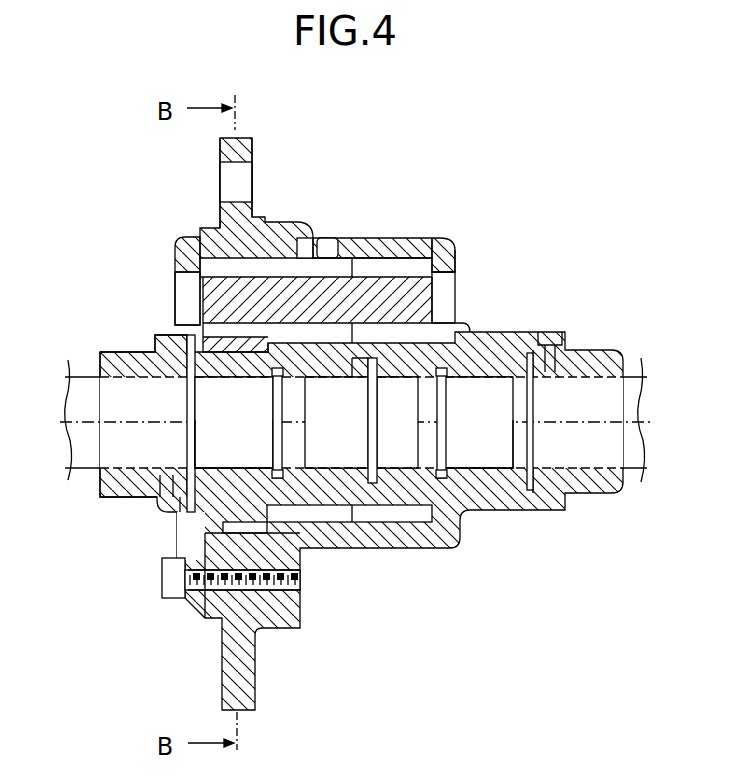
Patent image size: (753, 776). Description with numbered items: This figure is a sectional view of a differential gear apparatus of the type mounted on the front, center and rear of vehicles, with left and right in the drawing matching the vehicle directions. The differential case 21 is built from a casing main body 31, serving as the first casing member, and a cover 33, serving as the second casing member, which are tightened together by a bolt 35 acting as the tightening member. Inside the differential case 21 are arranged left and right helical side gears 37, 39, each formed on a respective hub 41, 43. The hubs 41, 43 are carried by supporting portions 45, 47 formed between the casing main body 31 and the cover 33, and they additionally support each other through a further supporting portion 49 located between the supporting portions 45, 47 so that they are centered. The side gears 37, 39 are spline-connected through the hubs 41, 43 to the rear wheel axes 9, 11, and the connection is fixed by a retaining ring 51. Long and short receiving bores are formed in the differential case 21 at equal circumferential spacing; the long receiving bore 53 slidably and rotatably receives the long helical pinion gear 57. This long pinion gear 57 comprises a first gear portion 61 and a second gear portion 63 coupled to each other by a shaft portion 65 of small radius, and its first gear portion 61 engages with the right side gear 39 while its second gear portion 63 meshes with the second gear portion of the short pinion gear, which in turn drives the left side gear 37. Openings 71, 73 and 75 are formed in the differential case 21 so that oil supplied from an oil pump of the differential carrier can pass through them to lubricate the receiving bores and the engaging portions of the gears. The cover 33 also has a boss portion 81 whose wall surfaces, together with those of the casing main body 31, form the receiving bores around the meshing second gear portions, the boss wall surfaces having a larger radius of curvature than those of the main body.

The rear wheel axis 9 is at (73, 345).
The rear wheel axis 11 is at (633, 345).
The differential case 21 is at (199, 226).
The casing main body 31 is at (262, 212).
The cover 33 is at (176, 238).
The bolt 35 is at (168, 598).
The helical side gear 37 is at (335, 520).
The helical side gear 39 is at (406, 520).
The hub 41 is at (248, 411).
The hub 43 is at (494, 411).
The supporting portion 45 is at (224, 498).
The supporting portion 47 is at (483, 475).
The supporting portion 49 is at (353, 362).
The retaining ring 51 is at (283, 390).
The receiving bore 53 is at (300, 262).
The long helical pinion gear 57 is at (445, 250).
The first gear portion 61 is at (384, 336).
The second gear portion 63 is at (242, 338).
The shaft portion 65 is at (326, 310).
The opening 71 is at (185, 290).
The opening 73 is at (340, 240).
The opening 75 is at (452, 292).
The boss portion 81 is at (187, 365).